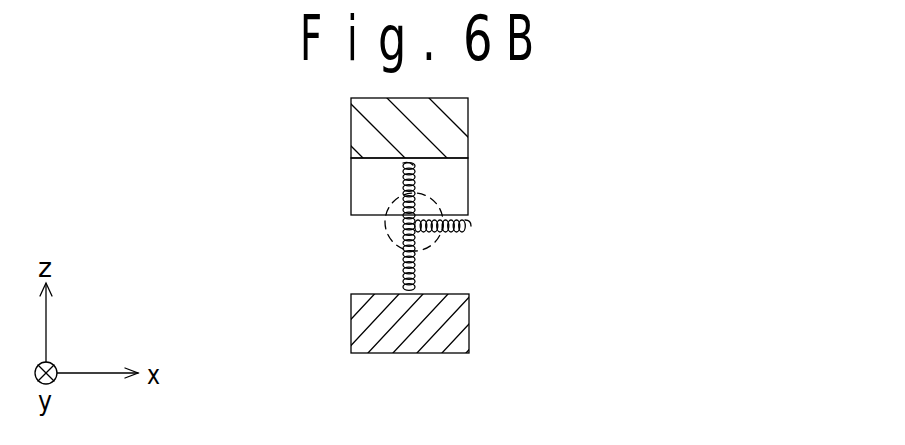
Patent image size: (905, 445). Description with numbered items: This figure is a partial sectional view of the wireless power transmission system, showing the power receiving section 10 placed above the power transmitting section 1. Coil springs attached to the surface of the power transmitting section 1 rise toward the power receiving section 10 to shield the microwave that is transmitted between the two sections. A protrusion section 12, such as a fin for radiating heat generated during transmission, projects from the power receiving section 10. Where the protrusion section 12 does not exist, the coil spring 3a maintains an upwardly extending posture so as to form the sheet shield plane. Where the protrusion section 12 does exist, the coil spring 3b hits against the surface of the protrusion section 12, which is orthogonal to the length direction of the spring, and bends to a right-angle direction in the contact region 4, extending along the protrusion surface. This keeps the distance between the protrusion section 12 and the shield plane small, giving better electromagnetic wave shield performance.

The power receiving section 10 is at (468, 125).
The protrusion section 12 is at (468, 183).
The power transmitting section 1 is at (469, 315).
The coil spring 3a is at (402, 187).
The coil spring 3b is at (471, 226).
The contact region 4 is at (392, 240).